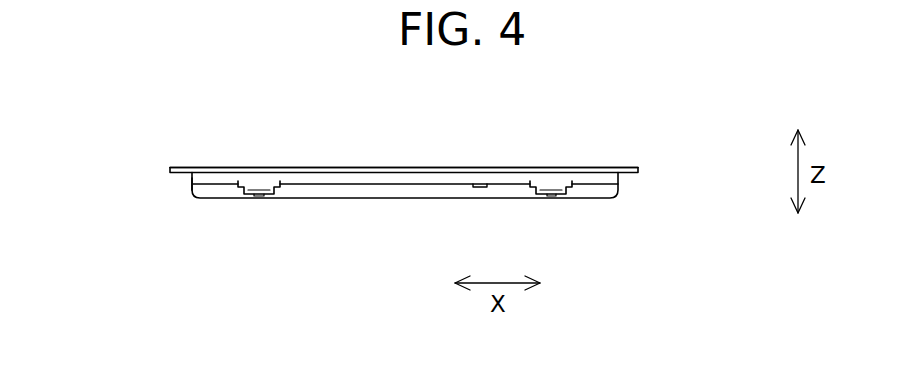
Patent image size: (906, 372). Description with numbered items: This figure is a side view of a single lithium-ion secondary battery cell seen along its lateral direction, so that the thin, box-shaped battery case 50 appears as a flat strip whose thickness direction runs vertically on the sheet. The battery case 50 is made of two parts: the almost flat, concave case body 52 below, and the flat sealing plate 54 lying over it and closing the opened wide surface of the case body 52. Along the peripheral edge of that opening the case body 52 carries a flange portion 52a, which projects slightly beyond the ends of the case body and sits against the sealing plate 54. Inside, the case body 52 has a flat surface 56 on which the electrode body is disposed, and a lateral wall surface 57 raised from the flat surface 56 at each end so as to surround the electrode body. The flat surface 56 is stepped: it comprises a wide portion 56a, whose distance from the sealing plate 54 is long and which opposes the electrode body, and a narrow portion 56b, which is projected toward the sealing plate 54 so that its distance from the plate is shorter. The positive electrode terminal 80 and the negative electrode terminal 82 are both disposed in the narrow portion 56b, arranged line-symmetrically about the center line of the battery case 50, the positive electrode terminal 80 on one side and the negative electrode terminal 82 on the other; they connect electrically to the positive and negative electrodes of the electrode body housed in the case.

The battery case 50 is at (430, 192).
The case body 52 is at (465, 191).
The flange portion 52a is at (641, 173).
The sealing plate 54 is at (405, 167).
The flat surface 56 is at (405, 234).
The wide portion 56a is at (390, 198).
The narrow portion 56b is at (434, 184).
The lateral wall surface 57 is at (191, 185).
The positive electrode terminal 80 is at (256, 192).
The negative electrode terminal 82 is at (550, 190).